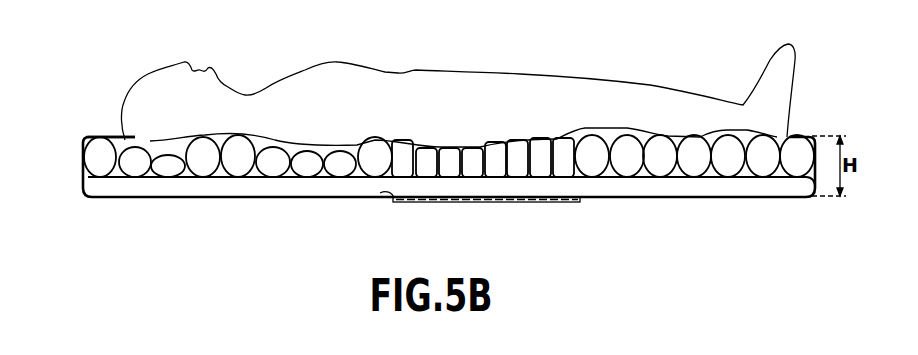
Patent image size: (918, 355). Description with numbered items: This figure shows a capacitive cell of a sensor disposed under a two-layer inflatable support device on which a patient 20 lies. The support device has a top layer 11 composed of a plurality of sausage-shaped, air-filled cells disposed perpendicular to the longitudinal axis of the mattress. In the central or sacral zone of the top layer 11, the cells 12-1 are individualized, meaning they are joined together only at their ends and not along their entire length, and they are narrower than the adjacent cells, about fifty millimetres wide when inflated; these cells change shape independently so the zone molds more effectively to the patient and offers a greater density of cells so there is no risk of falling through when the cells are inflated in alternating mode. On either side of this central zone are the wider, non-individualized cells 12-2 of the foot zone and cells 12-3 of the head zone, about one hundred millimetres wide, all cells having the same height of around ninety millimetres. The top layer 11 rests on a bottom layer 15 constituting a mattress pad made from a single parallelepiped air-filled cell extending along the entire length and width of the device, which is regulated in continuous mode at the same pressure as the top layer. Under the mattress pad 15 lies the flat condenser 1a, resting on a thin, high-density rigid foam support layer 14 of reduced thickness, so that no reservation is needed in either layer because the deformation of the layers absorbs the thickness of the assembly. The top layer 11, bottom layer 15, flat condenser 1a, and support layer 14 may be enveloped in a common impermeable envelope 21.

The top layer 11 is at (85, 146).
The common impermeable envelope 21 is at (118, 137).
The individualized cells of the central zone 12-1 is at (447, 155).
The cells of the foot zone 12-2 is at (660, 145).
The cells of the head zone 12-3 is at (242, 146).
The rigid foam support layer 14 is at (473, 198).
The flat condenser 1a is at (380, 193).
The bottom layer 15 is at (223, 187).
The user lying on mattress 20 is at (380, 75).